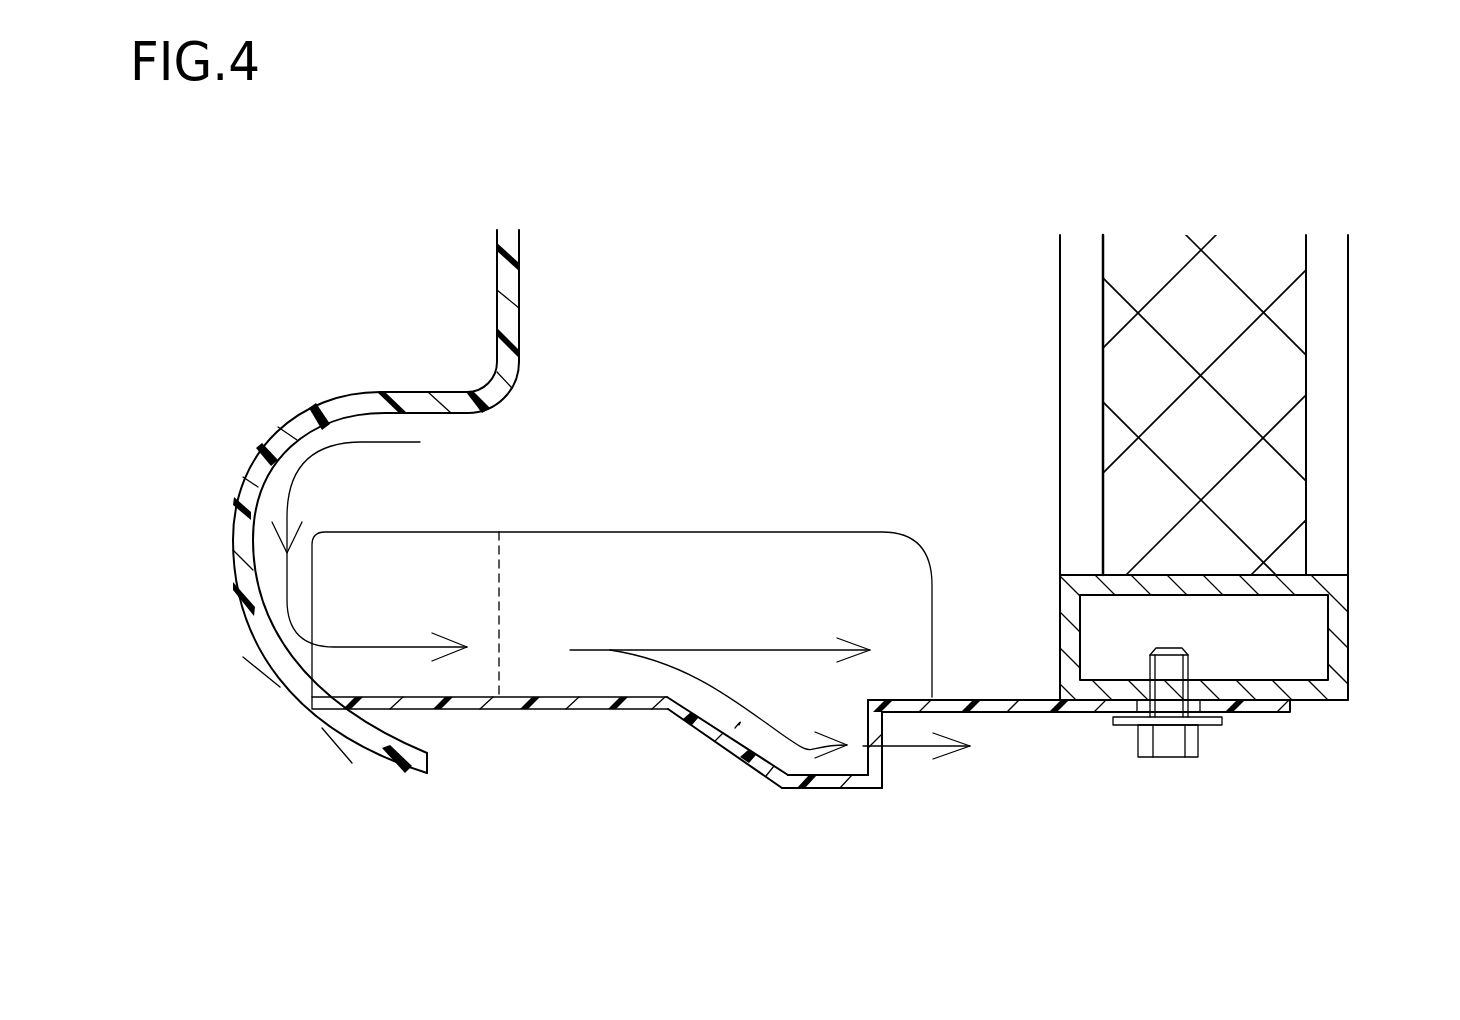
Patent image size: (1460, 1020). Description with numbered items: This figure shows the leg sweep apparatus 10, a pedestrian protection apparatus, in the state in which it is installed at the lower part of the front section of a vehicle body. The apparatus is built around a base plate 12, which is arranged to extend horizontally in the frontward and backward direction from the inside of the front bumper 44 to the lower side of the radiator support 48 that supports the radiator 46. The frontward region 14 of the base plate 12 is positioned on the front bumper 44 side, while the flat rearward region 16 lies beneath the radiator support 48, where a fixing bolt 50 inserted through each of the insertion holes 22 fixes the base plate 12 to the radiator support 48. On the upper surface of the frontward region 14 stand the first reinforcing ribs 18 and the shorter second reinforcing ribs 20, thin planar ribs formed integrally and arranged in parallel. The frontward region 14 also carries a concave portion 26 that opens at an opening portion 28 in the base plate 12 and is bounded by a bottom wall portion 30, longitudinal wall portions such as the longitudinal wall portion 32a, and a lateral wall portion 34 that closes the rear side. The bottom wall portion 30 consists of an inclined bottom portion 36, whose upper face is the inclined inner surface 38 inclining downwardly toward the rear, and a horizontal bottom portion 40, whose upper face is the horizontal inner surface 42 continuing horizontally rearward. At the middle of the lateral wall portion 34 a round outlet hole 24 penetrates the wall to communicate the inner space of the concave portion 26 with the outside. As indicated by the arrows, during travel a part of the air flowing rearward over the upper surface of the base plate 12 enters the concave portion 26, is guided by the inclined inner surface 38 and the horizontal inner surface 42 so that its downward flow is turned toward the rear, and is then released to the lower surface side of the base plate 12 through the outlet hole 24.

The leg sweep apparatus 10 is at (632, 470).
The base plate 12 is at (1012, 732).
The frontward region 14 is at (570, 716).
The rearward region 16 is at (1063, 728).
The first reinforcing ribs 18 is at (567, 578).
The second reinforcing ribs 20 is at (388, 562).
The insertion holes 22 is at (1190, 723).
The outlet hole 24 is at (883, 768).
The concave portion 26 is at (834, 708).
The opening portion 28 is at (862, 697).
The bottom wall portion 30 is at (774, 796).
The longitudinal wall portion 32a is at (807, 722).
The lateral wall portion 34 is at (877, 727).
The inclined bottom portion 36 is at (748, 758).
The inclined inner surface 38 is at (738, 724).
The horizontal bottom portion 40 is at (822, 782).
The horizontal inner surface 42 is at (830, 768).
The front bumper 44 is at (205, 545).
The radiator 46 is at (1090, 412).
The radiator support 48 is at (1335, 645).
The fixing bolt 50 is at (1172, 745).